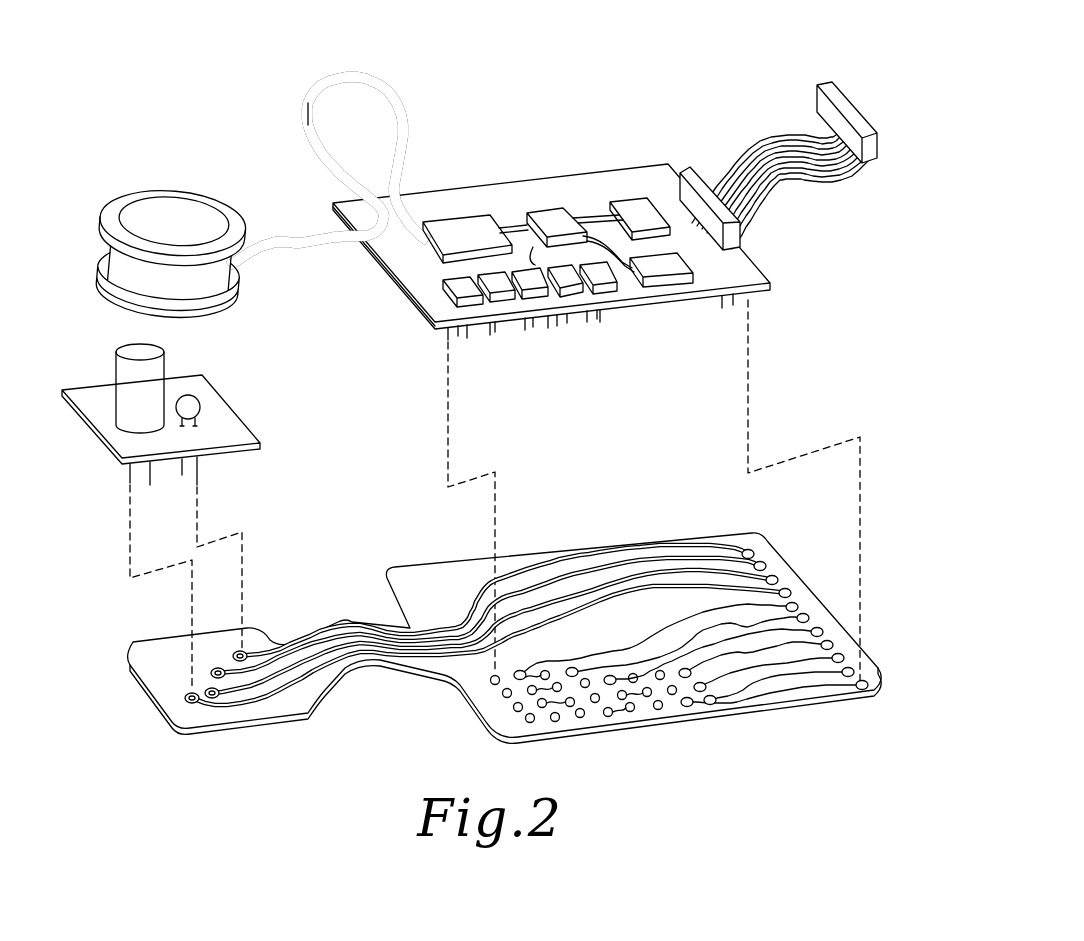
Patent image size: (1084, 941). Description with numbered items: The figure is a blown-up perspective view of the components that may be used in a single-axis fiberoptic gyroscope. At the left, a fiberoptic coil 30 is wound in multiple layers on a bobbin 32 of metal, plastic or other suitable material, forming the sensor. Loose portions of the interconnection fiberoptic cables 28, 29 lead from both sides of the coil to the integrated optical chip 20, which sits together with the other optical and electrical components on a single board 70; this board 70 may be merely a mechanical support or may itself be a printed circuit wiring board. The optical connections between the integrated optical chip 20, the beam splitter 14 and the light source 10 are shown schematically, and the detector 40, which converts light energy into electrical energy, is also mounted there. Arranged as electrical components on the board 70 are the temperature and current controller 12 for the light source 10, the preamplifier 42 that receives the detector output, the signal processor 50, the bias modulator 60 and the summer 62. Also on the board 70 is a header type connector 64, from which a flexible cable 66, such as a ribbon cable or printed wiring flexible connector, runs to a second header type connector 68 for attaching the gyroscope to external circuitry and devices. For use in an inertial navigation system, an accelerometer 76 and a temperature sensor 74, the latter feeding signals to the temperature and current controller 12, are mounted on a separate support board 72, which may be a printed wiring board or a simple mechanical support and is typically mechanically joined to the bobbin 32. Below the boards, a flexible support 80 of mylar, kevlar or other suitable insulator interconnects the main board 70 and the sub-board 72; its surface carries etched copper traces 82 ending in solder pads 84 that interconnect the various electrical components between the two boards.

The light source 10 is at (630, 200).
The temperature and current controller 12 is at (603, 303).
The beam splitter 14 is at (547, 208).
The integrated optical chip 20 is at (455, 222).
The interconnection fiberoptic cable 28 is at (327, 97).
The interconnection fiberoptic cable 29 is at (348, 70).
The fiberoptic coil 30 is at (118, 267).
The bobbin 32 is at (142, 198).
The photodetector 40 is at (770, 282).
The preamplifier 42 is at (620, 287).
The signal processor 50 is at (495, 300).
The bias modulator 60 is at (533, 293).
The summer 62 is at (430, 302).
The header type connector 64 is at (693, 168).
The flexible cable 66 is at (755, 132).
The header type connector 68 is at (820, 85).
The board 70 is at (770, 289).
The support board 72 is at (240, 432).
The temperature sensor 74 is at (193, 403).
The accelerometer 76 is at (132, 355).
The flexible support 80 is at (647, 540).
The copper traces 82 is at (790, 605).
The solder pads 84 is at (752, 556).